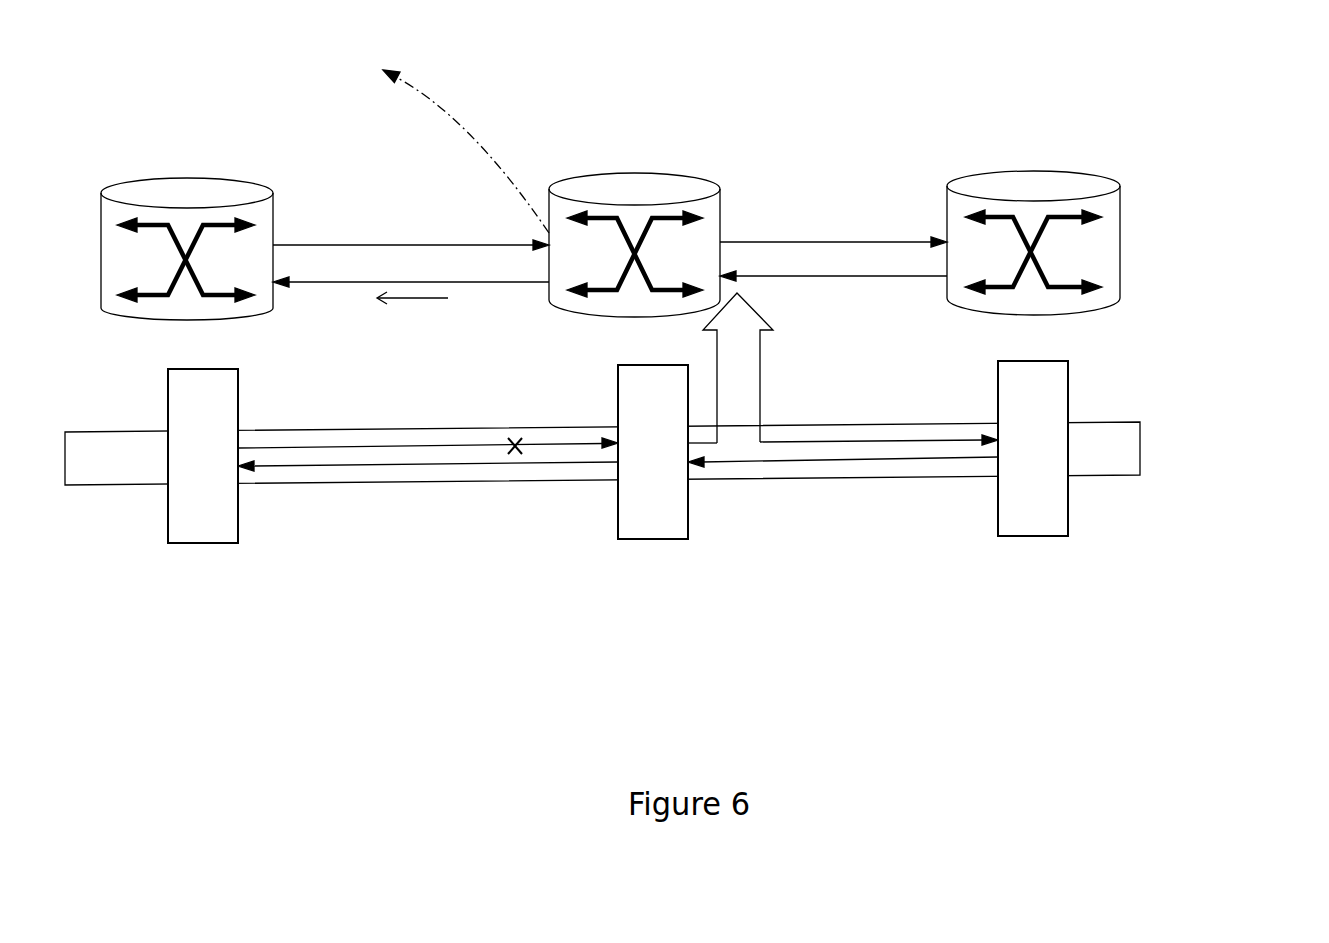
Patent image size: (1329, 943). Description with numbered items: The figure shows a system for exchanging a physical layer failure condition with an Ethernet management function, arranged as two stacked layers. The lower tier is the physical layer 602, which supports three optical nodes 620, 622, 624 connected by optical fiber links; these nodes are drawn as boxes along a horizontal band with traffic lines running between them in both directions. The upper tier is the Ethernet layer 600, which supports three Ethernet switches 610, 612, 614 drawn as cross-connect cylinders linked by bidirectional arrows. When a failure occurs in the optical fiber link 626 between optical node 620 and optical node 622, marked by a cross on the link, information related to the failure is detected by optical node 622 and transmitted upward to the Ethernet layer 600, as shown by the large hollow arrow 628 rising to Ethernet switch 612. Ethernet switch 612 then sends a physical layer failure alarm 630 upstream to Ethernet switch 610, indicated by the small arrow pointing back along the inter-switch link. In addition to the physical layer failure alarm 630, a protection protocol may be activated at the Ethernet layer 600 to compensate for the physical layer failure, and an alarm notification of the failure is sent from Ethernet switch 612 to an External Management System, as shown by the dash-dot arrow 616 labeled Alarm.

The Ethernet layer 600 is at (795, 253).
The physical layer 602 is at (692, 450).
The Ethernet switch 610 is at (227, 180).
The Ethernet switch 612 is at (655, 173).
The Ethernet switch 614 is at (1072, 170).
The alarm notification 616 is at (465, 118).
The optical node 620 is at (203, 456).
The optical node 622 is at (653, 452).
The optical node 624 is at (1033, 448).
The optical fiber link 626 is at (510, 442).
The transmission of failure information 628 is at (756, 368).
The physical layer failure alarm 630 is at (412, 311).